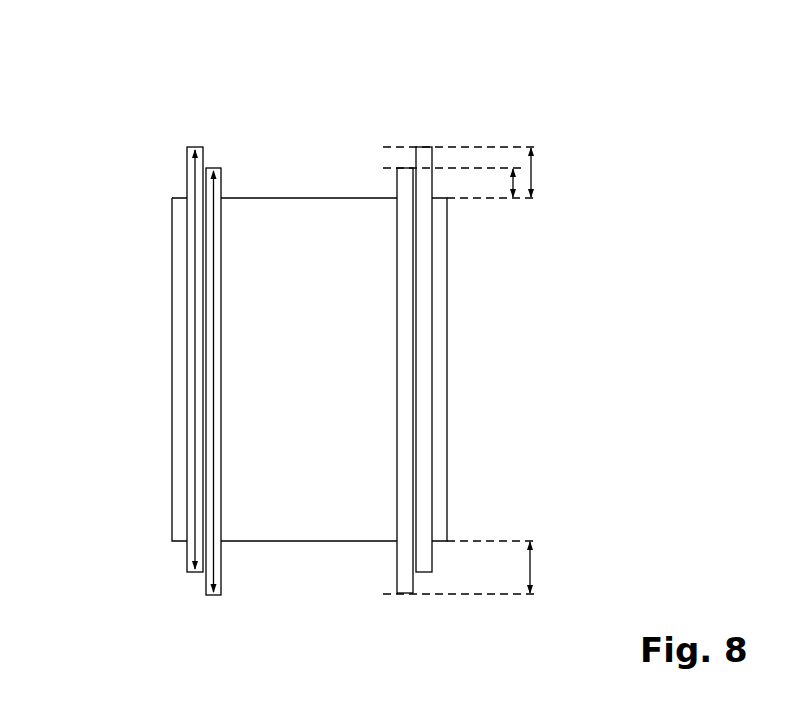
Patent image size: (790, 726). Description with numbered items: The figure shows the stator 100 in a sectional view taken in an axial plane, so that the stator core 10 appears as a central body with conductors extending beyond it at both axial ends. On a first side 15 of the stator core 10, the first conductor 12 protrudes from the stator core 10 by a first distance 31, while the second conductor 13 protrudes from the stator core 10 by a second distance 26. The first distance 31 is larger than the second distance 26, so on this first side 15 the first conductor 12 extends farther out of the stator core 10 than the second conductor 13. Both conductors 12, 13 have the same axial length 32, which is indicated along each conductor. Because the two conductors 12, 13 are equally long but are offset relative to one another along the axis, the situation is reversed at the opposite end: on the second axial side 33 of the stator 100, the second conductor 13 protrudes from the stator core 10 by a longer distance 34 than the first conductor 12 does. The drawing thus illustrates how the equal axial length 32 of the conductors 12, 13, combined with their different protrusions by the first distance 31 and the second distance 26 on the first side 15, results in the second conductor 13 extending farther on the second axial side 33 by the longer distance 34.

The stator 100 is at (126, 133).
The stator core 10 is at (308, 230).
The first conductor 12 is at (425, 412).
The second conductor 13 is at (408, 455).
The first side 15 is at (351, 153).
The second distance 26 is at (515, 186).
The first distance 31 is at (533, 172).
The axial length 32 is at (212, 378).
The second axial side 33 is at (281, 562).
The longer distance 34 is at (532, 567).